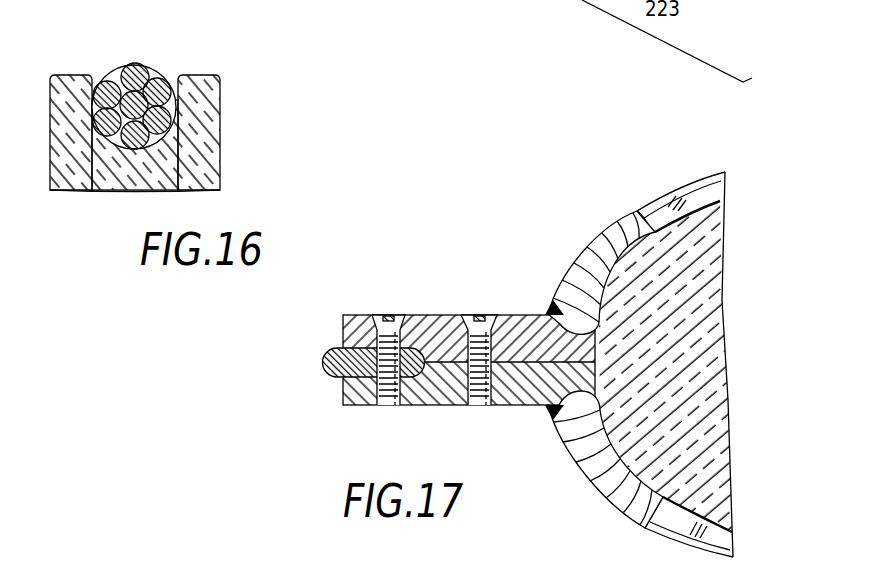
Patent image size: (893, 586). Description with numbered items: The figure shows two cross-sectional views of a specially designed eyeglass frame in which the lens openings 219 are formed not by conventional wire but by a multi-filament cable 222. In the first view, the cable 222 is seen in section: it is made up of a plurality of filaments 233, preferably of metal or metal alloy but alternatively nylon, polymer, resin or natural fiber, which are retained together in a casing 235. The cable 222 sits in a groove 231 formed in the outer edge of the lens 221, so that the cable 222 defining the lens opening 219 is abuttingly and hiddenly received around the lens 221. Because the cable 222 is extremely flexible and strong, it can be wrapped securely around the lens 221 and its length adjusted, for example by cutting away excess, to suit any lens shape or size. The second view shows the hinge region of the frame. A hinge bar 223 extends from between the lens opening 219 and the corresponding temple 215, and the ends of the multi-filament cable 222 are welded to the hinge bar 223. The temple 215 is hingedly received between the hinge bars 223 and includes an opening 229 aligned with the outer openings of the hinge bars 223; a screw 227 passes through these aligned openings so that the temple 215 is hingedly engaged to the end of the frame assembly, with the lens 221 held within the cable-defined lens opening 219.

In FIG. 16, the groove 231 is at (90, 100).
In FIG. 16, the filaments 233 is at (135, 66).
In FIG. 16, the casing 235 is at (188, 107).
In FIG. 17, the temple 215 is at (322, 372).
In FIG. 17, the lens opening 219 is at (693, 199).
In FIG. 17, the lens 221 is at (712, 283).
In FIG. 17, the cable 222 is at (600, 237).
In FIG. 17, the hinge bar 223 is at (446, 390).
In FIG. 17, the screw 227 is at (468, 314).
In FIG. 17, the opening 229 is at (363, 407).